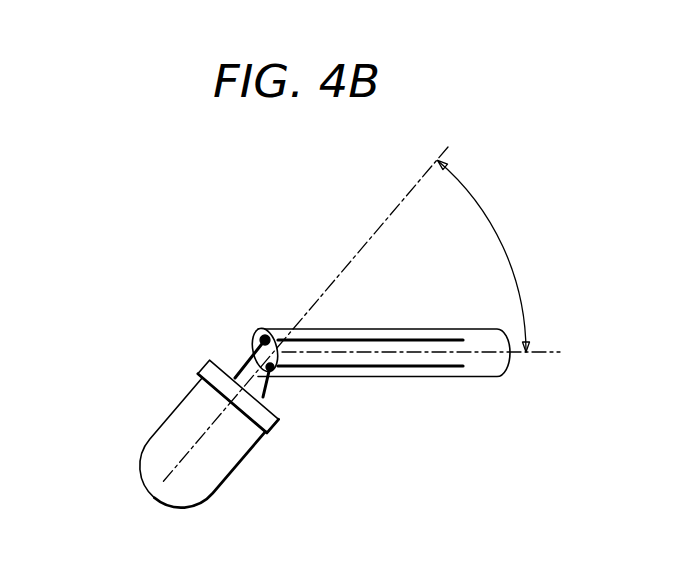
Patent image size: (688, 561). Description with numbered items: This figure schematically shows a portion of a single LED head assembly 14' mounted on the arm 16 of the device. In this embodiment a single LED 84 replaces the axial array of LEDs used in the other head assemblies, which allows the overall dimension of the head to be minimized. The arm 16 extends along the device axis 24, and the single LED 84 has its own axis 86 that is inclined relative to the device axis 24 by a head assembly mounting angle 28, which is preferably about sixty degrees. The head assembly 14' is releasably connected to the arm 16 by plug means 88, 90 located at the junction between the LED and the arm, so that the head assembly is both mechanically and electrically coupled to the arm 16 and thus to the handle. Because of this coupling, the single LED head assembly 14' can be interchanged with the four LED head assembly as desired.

The single LED head assembly 14' is at (176, 304).
The arm 16 is at (460, 378).
The device axis 24 is at (543, 350).
The head assembly mounting angle 28 is at (495, 225).
The single LED 84 is at (210, 468).
The axis 86 is at (325, 293).
The plug means 88 is at (263, 335).
The plug means 90 is at (272, 372).